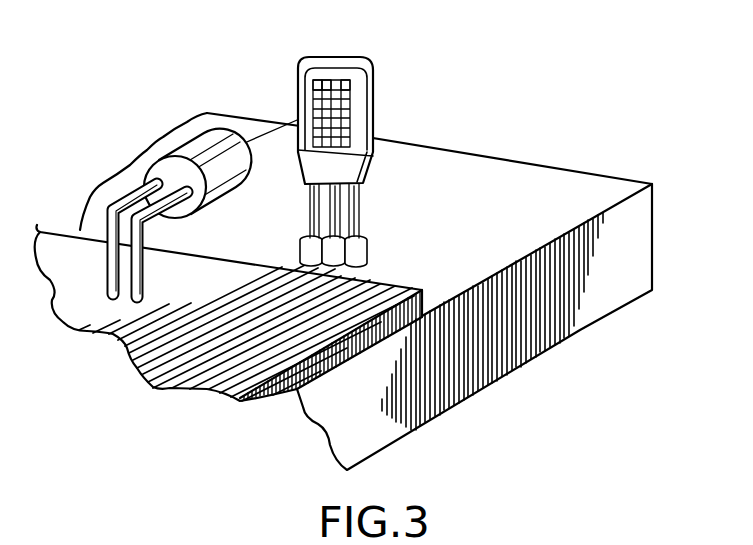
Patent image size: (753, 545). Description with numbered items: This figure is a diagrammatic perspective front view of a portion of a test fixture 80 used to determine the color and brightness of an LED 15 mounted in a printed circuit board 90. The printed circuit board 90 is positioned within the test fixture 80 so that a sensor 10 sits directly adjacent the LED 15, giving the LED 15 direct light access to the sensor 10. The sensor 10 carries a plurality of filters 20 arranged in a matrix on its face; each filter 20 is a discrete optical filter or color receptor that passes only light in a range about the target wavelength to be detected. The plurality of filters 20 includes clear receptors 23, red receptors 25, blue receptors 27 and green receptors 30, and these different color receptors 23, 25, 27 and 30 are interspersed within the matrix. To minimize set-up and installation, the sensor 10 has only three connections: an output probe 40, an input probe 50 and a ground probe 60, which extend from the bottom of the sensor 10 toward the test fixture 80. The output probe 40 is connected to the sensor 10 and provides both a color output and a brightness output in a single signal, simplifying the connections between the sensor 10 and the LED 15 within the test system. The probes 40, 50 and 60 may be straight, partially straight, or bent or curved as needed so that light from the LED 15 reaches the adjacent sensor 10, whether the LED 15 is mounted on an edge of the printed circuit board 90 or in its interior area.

The sensor 10 is at (397, 127).
The LED 15 is at (90, 158).
The filter 20 is at (349, 95).
The clear receptor 23 is at (313, 80).
The red receptor 25 is at (327, 80).
The blue receptor 27 is at (338, 86).
The green receptor 30 is at (313, 92).
The output probe 40 is at (362, 212).
The input probe 50 is at (330, 219).
The ground probe 60 is at (312, 202).
The test fixture 80 is at (632, 245).
The printed circuit board 90 is at (141, 374).